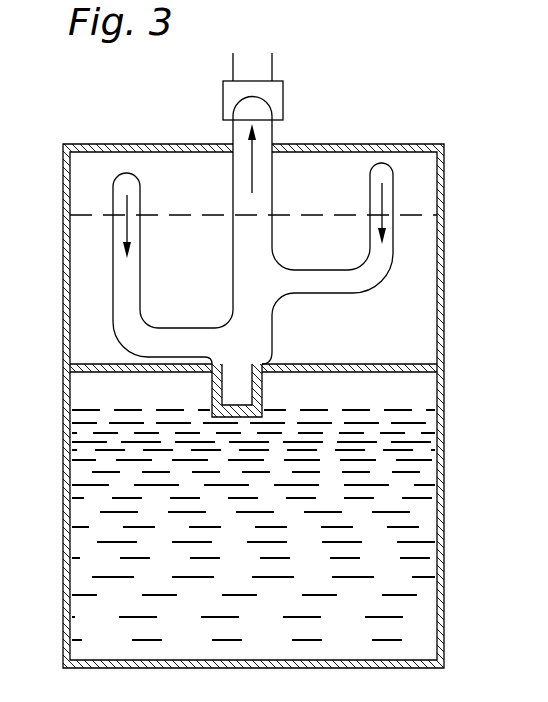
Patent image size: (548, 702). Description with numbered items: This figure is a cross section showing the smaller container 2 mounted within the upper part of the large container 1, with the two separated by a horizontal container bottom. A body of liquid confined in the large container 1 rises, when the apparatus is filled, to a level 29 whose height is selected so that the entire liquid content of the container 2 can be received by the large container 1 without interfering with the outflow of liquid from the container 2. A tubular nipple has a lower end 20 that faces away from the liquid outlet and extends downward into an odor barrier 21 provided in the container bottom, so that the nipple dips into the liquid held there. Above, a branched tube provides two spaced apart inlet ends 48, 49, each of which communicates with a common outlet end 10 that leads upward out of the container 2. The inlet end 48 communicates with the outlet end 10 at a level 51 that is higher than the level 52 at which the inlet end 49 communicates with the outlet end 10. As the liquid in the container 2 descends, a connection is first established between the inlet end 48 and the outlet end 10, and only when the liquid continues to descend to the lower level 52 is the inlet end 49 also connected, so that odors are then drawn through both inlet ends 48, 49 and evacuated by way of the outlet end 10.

The large container 1 is at (423, 455).
The container 2 is at (423, 252).
The outlet end 10 is at (257, 108).
The lower end 20 is at (237, 390).
The odor barrier 21 is at (258, 392).
The level 29 is at (395, 410).
The inlet end 48 is at (385, 175).
The inlet end 49 is at (127, 185).
The level 51 is at (300, 283).
The level 52 is at (183, 345).